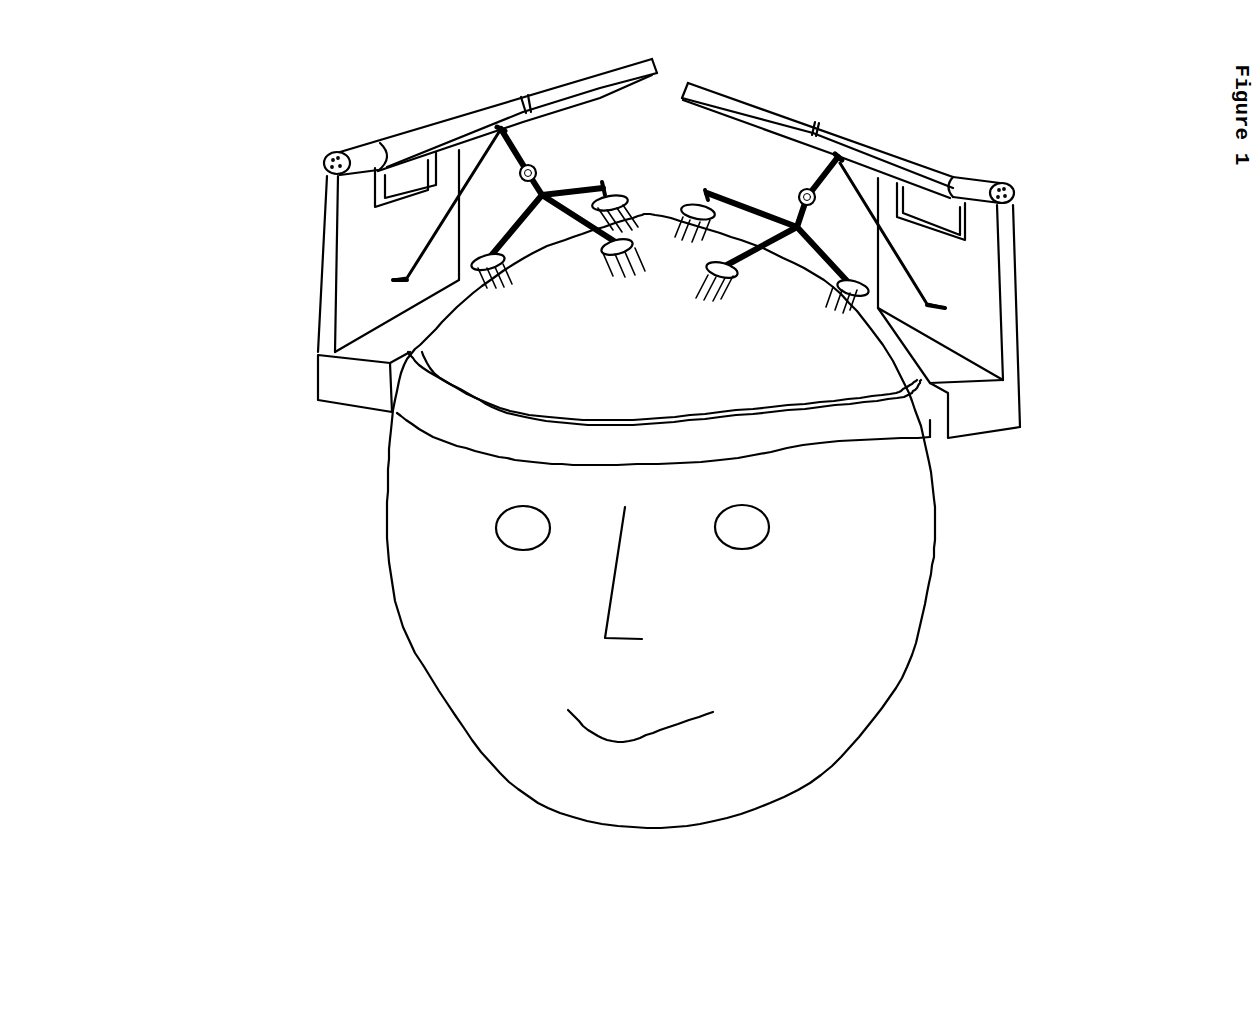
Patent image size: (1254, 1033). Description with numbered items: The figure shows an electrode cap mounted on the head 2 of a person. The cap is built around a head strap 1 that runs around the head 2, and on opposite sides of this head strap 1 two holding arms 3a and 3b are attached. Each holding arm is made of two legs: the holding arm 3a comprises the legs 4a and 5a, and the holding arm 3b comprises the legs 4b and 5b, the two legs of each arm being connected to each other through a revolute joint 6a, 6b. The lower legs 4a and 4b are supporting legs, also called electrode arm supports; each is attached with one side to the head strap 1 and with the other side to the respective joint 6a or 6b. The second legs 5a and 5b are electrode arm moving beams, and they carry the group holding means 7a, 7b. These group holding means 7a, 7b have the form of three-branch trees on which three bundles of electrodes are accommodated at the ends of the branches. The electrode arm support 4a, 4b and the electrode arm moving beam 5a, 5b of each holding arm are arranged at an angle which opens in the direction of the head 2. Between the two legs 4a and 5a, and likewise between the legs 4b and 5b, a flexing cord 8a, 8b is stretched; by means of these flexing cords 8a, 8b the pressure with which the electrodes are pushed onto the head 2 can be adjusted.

The head strap 1 is at (438, 423).
The head 2 is at (900, 555).
The holding arm 3a is at (328, 295).
The holding arm 3b is at (1012, 293).
The lower leg 4a is at (322, 356).
The lower leg 4b is at (1007, 381).
The second leg 5a is at (530, 86).
The second leg 5b is at (898, 143).
The revolute joint 6a is at (320, 150).
The revolute joint 6b is at (1020, 180).
The group holding means 7a is at (605, 172).
The group holding means 7b is at (698, 187).
The flexing cord 8a is at (437, 228).
The flexing cord 8b is at (922, 277).